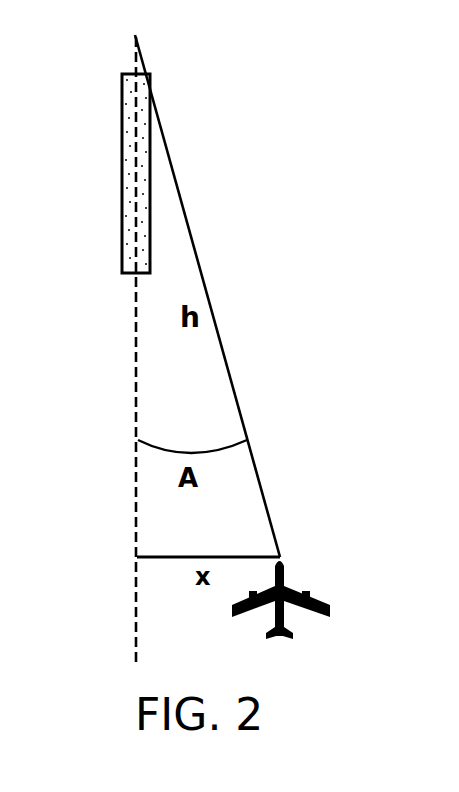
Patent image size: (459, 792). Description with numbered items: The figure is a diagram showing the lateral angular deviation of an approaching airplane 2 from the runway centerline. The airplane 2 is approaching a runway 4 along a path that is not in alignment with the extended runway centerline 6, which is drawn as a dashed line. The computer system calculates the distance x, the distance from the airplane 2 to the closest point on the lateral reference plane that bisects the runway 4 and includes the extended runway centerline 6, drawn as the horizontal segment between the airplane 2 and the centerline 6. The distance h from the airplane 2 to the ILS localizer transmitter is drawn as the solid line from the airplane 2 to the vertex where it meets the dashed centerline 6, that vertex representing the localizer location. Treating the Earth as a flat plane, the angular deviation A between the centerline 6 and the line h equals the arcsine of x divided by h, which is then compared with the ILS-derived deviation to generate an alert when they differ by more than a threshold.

The airplane 2 is at (283, 563).
The runway 4 is at (122, 172).
The runway centerline 6 is at (137, 418).